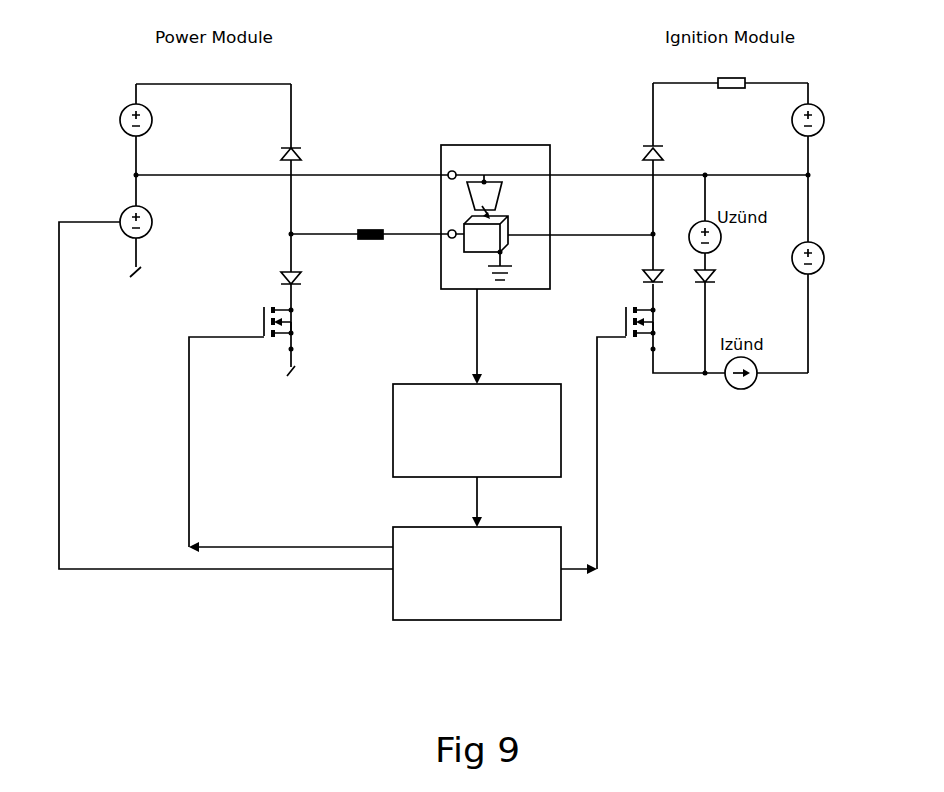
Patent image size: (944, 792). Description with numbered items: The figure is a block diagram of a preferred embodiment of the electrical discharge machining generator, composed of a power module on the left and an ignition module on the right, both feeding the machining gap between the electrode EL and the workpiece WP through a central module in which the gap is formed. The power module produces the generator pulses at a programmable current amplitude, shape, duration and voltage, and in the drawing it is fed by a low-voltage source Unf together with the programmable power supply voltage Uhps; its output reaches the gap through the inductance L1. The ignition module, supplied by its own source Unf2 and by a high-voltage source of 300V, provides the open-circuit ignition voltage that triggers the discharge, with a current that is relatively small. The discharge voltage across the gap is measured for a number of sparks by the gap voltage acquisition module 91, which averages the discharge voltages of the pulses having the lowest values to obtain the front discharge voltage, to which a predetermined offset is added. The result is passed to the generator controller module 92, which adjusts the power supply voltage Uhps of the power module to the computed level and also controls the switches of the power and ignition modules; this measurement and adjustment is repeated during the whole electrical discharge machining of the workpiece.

The acquisition module 91 is at (477, 430).
The generator controller module 92 is at (477, 573).
The inductor L1 is at (370, 222).
The electrode EL is at (484, 192).
The workpiece WP is at (486, 234).
The low-voltage supply source Unf is at (114, 115).
The power supply voltage Uhps is at (110, 217).
The ignition module supply source Unf2 is at (827, 115).
The 300 V voltage source 300V is at (828, 253).